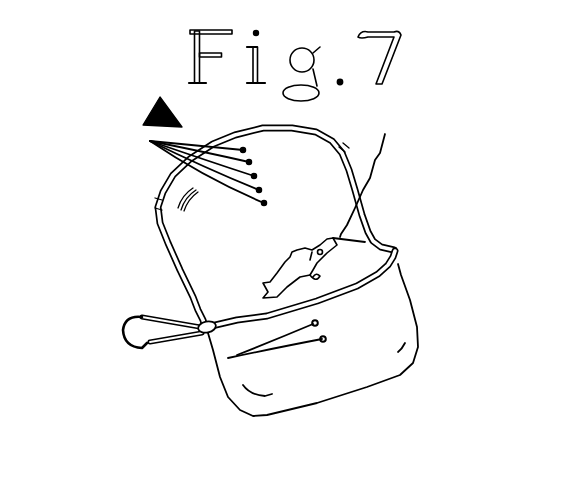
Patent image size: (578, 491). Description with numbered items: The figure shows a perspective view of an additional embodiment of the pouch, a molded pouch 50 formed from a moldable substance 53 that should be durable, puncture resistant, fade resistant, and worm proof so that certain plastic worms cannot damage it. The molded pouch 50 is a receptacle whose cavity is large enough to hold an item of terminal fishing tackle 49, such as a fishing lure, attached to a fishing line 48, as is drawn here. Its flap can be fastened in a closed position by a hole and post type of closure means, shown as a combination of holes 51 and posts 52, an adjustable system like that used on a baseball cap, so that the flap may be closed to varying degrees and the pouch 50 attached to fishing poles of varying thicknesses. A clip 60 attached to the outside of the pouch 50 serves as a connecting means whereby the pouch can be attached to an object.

The fishing line 48 is at (367, 177).
The terminal fishing tackle 49 is at (383, 246).
The molded pouch 50 is at (140, 108).
The holes 51 is at (150, 141).
The posts 52 is at (237, 355).
The moldable substance 53 is at (214, 231).
The clip 60 is at (123, 330).